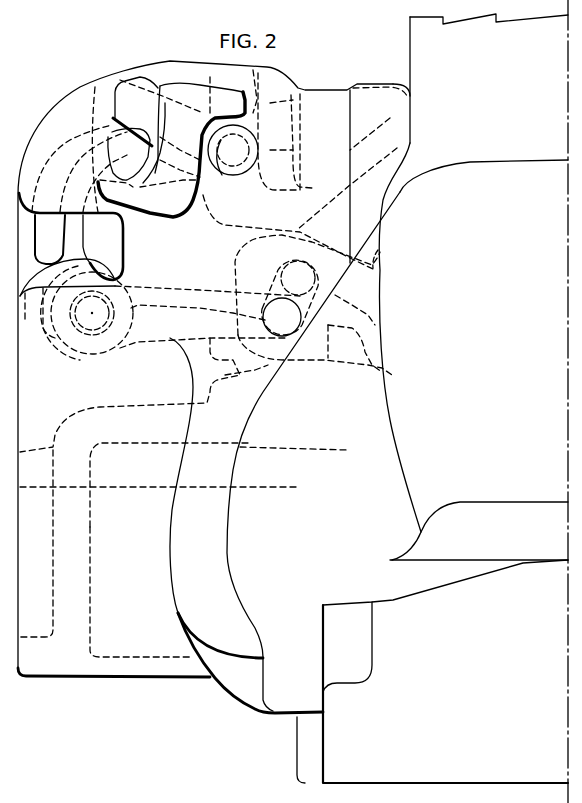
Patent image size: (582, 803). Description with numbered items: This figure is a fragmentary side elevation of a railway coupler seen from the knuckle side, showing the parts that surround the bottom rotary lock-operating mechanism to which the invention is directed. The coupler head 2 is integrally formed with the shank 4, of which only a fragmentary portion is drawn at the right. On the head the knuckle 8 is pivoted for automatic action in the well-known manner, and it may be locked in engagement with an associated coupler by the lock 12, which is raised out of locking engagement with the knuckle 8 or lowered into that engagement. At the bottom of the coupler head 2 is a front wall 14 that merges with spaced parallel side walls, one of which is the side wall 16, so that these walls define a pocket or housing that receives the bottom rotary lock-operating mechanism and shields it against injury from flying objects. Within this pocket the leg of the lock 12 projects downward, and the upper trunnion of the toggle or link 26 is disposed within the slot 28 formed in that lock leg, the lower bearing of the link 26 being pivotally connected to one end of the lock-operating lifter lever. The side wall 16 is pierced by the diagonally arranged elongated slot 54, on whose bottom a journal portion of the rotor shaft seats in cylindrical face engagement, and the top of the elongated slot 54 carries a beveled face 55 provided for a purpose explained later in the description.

The coupler head 2 is at (233, 693).
The shank 4 is at (428, 32).
The knuckle 8 is at (432, 401).
The lock 12 is at (372, 326).
The front wall 14 is at (148, 490).
The side wall 16 is at (205, 369).
The toggle or link 26 is at (144, 395).
The slot 28 is at (288, 280).
The elongated slot 54 is at (238, 156).
The beveled face 55 is at (243, 187).